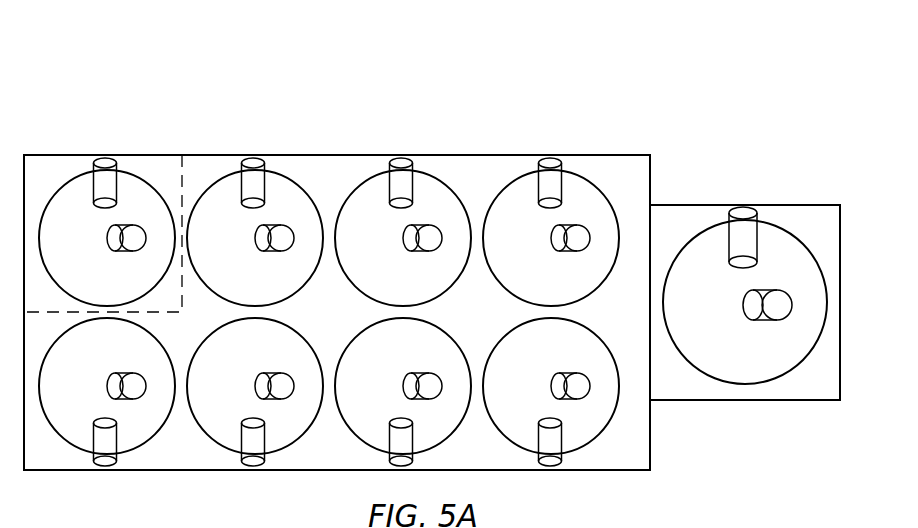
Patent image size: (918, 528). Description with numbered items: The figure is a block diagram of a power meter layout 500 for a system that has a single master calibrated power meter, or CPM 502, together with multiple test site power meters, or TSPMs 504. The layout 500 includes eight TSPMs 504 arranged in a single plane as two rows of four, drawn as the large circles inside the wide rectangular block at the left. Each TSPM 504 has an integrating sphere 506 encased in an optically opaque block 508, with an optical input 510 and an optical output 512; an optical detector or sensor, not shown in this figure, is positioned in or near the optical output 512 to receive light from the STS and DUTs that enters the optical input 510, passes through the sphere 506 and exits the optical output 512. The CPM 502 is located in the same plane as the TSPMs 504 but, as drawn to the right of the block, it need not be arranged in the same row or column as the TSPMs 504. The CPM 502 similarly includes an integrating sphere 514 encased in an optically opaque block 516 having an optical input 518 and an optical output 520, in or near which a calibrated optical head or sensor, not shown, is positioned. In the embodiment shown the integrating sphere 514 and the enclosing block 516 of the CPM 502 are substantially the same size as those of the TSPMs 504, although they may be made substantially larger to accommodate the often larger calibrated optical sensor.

The power meter layout 500 is at (127, 51).
The calibrated power meter 502 is at (746, 400).
The test site power meter 504 is at (182, 313).
The integrating sphere 506 is at (85, 251).
The optically opaque block 508 is at (65, 181).
The optical input 510 is at (119, 251).
The optical output 512 is at (103, 159).
The integrating sphere 514 is at (718, 316).
The optically opaque block 516 is at (828, 233).
The optical input 518 is at (768, 321).
The optical output 520 is at (744, 206).